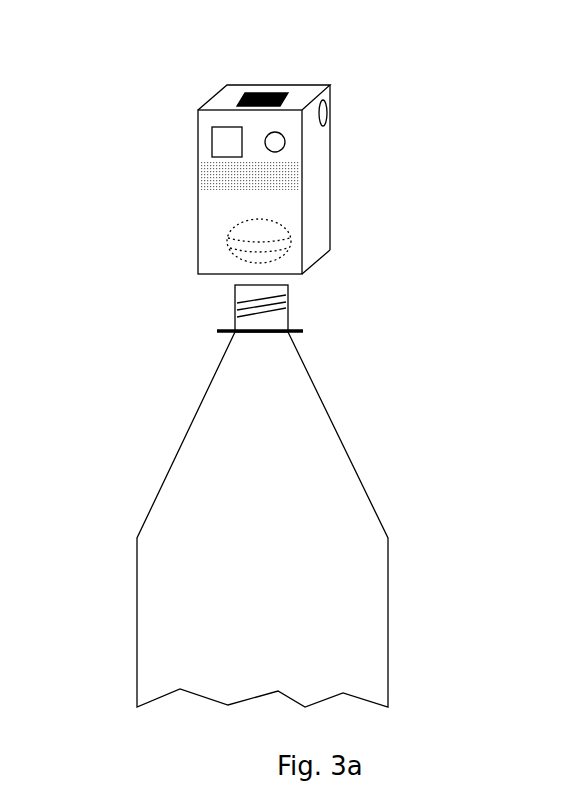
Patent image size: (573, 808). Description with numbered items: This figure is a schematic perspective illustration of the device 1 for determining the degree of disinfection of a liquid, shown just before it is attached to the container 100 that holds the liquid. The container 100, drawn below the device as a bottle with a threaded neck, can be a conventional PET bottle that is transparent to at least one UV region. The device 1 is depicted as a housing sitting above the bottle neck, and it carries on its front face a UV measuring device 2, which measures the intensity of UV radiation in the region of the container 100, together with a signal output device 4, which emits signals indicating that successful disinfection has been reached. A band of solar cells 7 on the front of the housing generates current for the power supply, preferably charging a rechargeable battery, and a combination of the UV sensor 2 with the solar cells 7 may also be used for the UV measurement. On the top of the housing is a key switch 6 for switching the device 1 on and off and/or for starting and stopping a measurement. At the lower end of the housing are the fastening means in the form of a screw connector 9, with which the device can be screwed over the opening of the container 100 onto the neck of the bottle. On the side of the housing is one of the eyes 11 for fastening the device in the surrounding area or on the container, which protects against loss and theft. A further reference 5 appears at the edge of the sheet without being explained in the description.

The housing 1 is at (208, 98).
The button 2 is at (285, 143).
The display 4 is at (212, 141).
The liquid 5 is at (572, 760).
The slot opening 6 is at (255, 90).
The ventilation band 7 is at (300, 182).
The battery 9 is at (268, 253).
The side opening 11 is at (333, 113).
The bottle 100 is at (327, 408).